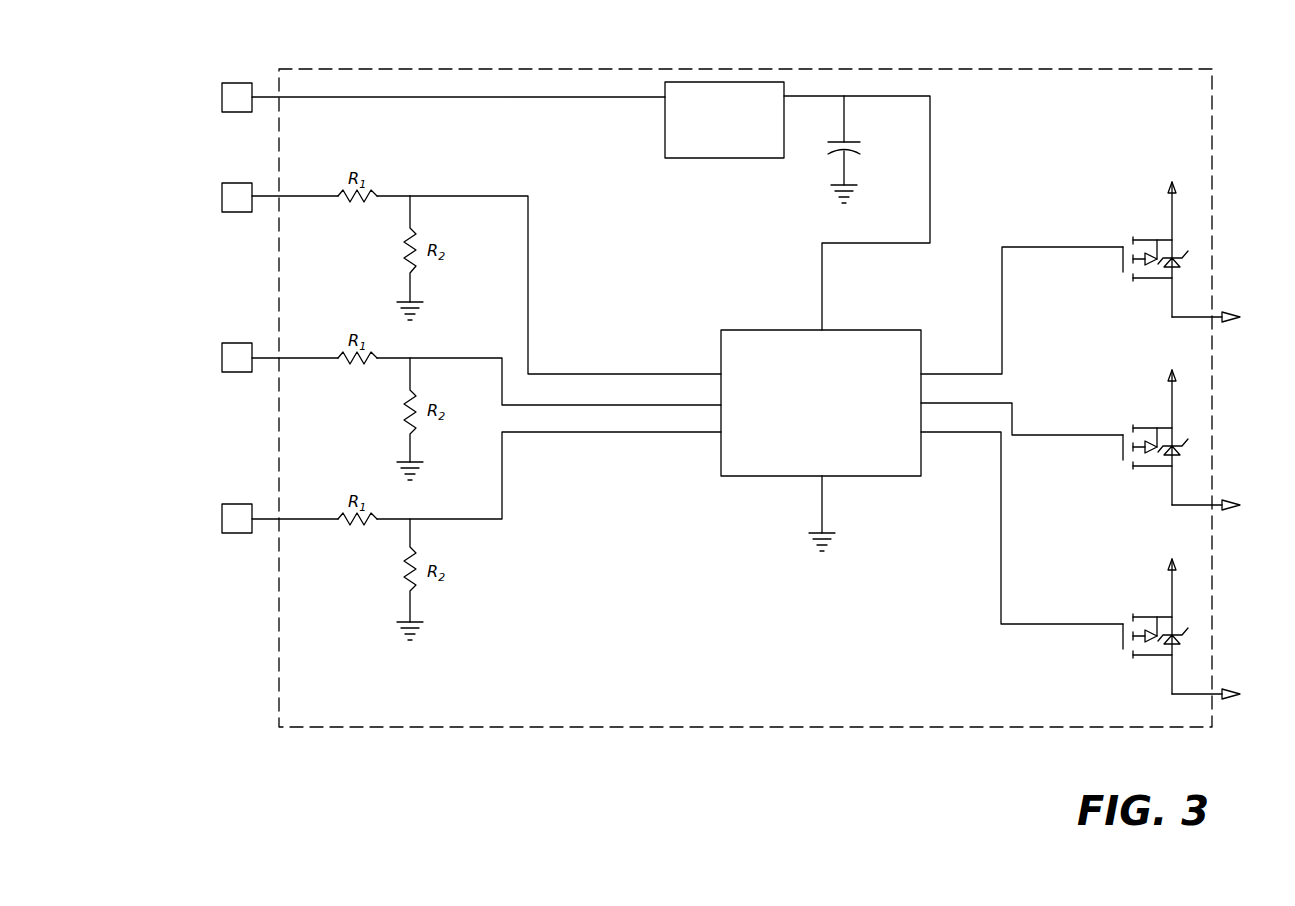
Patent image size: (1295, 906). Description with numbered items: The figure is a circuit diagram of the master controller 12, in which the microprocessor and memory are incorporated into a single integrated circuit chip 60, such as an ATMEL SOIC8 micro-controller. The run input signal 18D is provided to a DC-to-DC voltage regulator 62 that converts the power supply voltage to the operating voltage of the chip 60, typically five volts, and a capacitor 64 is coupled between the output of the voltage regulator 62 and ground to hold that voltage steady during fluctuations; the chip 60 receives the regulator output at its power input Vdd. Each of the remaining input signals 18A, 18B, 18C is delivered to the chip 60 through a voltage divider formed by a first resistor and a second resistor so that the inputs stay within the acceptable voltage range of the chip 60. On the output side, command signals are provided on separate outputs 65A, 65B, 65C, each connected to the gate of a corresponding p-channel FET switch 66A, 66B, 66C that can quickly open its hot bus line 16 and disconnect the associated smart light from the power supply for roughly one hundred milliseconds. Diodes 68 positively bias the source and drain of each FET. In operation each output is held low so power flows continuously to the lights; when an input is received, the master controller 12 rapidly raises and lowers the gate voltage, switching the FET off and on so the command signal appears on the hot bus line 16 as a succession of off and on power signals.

The master controller 12 is at (718, 728).
The hot bus line 16 is at (1213, 313).
The input signal 18A is at (299, 519).
The input signal 18B is at (299, 358).
The input signal 18C is at (299, 196).
The run input signal 18D is at (310, 97).
The integrated circuit chip 60 is at (777, 477).
The DC-to-DC voltage regulator 62 is at (707, 82).
The capacitor 64 is at (850, 141).
The output 65A is at (1000, 345).
The output 65B is at (1013, 413).
The output 65C is at (1000, 565).
The switch 66A is at (1125, 223).
The switch 66B is at (1125, 470).
The switch 66C is at (1127, 607).
The diode 68 is at (1180, 262).